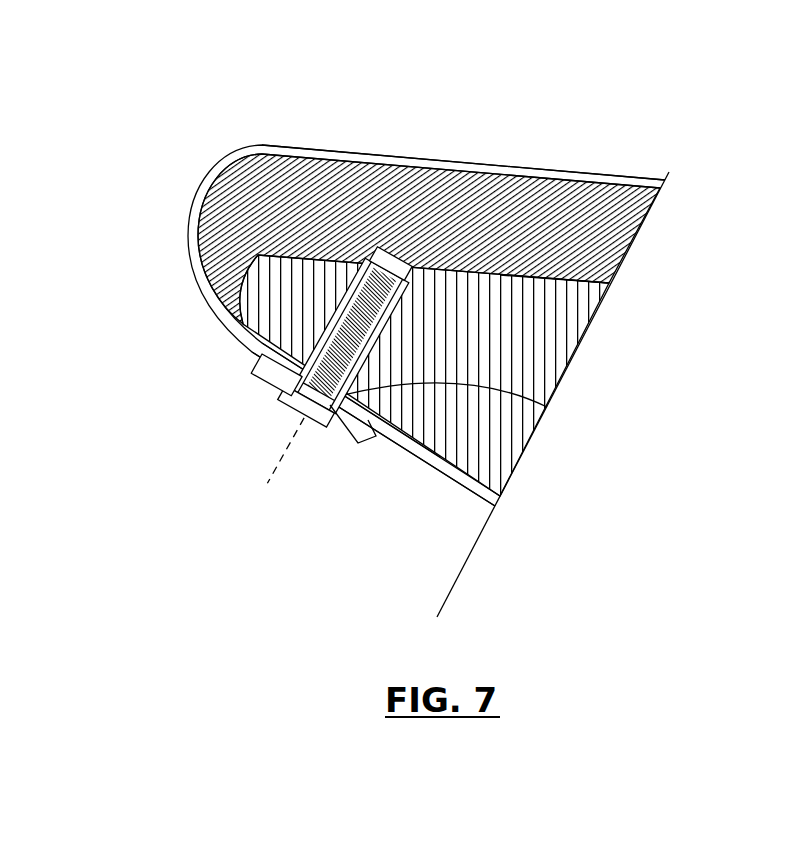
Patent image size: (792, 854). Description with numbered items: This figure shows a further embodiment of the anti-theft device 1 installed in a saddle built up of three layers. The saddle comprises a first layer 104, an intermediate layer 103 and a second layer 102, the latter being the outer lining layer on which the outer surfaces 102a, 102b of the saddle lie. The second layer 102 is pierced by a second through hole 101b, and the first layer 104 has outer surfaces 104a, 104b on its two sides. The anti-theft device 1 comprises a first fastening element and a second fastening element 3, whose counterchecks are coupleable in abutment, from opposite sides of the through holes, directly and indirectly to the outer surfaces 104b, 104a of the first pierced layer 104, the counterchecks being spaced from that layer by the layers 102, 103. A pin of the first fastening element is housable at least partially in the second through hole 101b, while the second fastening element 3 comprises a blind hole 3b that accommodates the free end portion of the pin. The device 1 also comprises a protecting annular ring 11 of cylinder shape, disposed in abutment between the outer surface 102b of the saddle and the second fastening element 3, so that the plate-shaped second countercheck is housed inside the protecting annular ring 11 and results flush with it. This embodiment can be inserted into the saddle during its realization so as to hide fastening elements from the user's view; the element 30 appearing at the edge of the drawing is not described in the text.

The anti-theft device 1 is at (290, 504).
The second fastening element 3 is at (274, 352).
The blind hole 3b is at (283, 442).
The protecting annular ring 11 is at (212, 356).
The element 30 is at (777, 321).
The second through hole 101b is at (547, 407).
The second layer 102 is at (428, 336).
The outer surface 102a is at (463, 104).
The outer surface 102b is at (373, 481).
The layer 103 is at (597, 200).
The first layer 104 is at (447, 410).
The outer surface of first layer 104a is at (351, 454).
The outer surface of first layer 104b is at (600, 280).